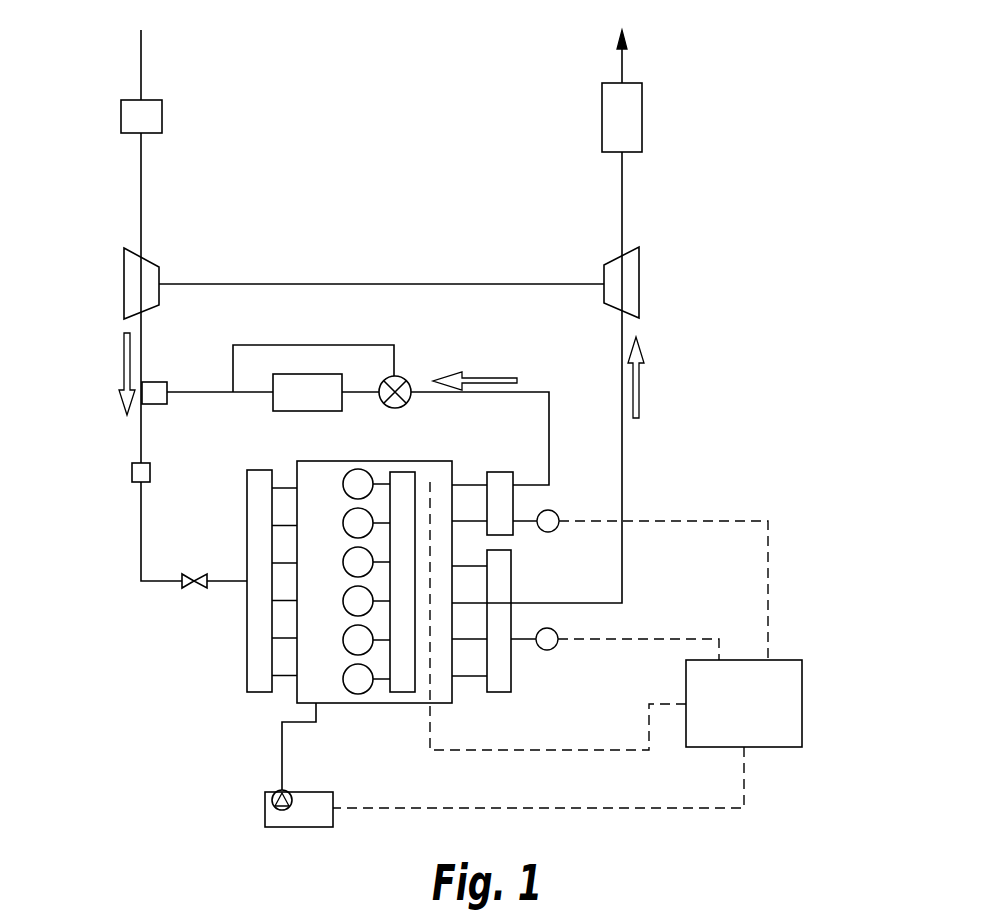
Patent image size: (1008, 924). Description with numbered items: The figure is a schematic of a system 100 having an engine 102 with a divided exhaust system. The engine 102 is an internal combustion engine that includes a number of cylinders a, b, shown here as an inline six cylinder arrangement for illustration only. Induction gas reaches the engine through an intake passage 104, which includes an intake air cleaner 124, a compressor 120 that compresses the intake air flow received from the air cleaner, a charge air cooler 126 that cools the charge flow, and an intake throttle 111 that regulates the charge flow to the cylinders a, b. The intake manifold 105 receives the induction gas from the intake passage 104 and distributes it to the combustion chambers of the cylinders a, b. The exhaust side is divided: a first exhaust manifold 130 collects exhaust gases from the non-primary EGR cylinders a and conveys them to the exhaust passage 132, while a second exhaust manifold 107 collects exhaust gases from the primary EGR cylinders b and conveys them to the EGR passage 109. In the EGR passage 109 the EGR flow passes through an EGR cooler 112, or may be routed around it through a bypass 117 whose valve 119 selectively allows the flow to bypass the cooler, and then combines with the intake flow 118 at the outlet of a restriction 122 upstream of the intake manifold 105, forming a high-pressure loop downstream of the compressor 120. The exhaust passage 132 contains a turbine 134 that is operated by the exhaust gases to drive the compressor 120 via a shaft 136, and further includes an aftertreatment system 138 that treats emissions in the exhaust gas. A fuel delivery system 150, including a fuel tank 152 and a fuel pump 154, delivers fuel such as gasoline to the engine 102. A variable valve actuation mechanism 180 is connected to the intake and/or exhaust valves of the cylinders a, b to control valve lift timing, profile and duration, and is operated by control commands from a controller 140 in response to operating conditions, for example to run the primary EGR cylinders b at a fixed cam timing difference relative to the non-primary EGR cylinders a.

The system 100 is at (808, 316).
The engine 102 is at (367, 611).
The intake passage 104 is at (141, 438).
The intake manifold 105 is at (247, 650).
The second exhaust manifold 107 is at (497, 472).
The EGR passage 109 is at (549, 416).
The intake throttle 111 is at (192, 574).
The EGR cooler 112 is at (285, 411).
The bypass 117 is at (283, 345).
The intake flow 118 is at (123, 368).
The valve 119 is at (398, 376).
The compressor 120 is at (150, 260).
The restriction 122 is at (172, 382).
The intake air cleaner 124 is at (162, 117).
The charge air cooler 126 is at (132, 473).
The first exhaust manifold 130 is at (513, 670).
The exhaust passage 132 is at (622, 452).
The turbine 134 is at (630, 277).
The shaft 136 is at (320, 284).
The aftertreatment system 138 is at (642, 113).
The controller 140 is at (803, 688).
The fuel delivery system 150 is at (247, 805).
The fuel tank 152 is at (313, 827).
The fuel pump 154 is at (271, 790).
The variable valve actuation mechanism 180 is at (410, 701).
The non-primary EGR cylinders a is at (343, 603).
The primary EGR cylinders b is at (343, 522).